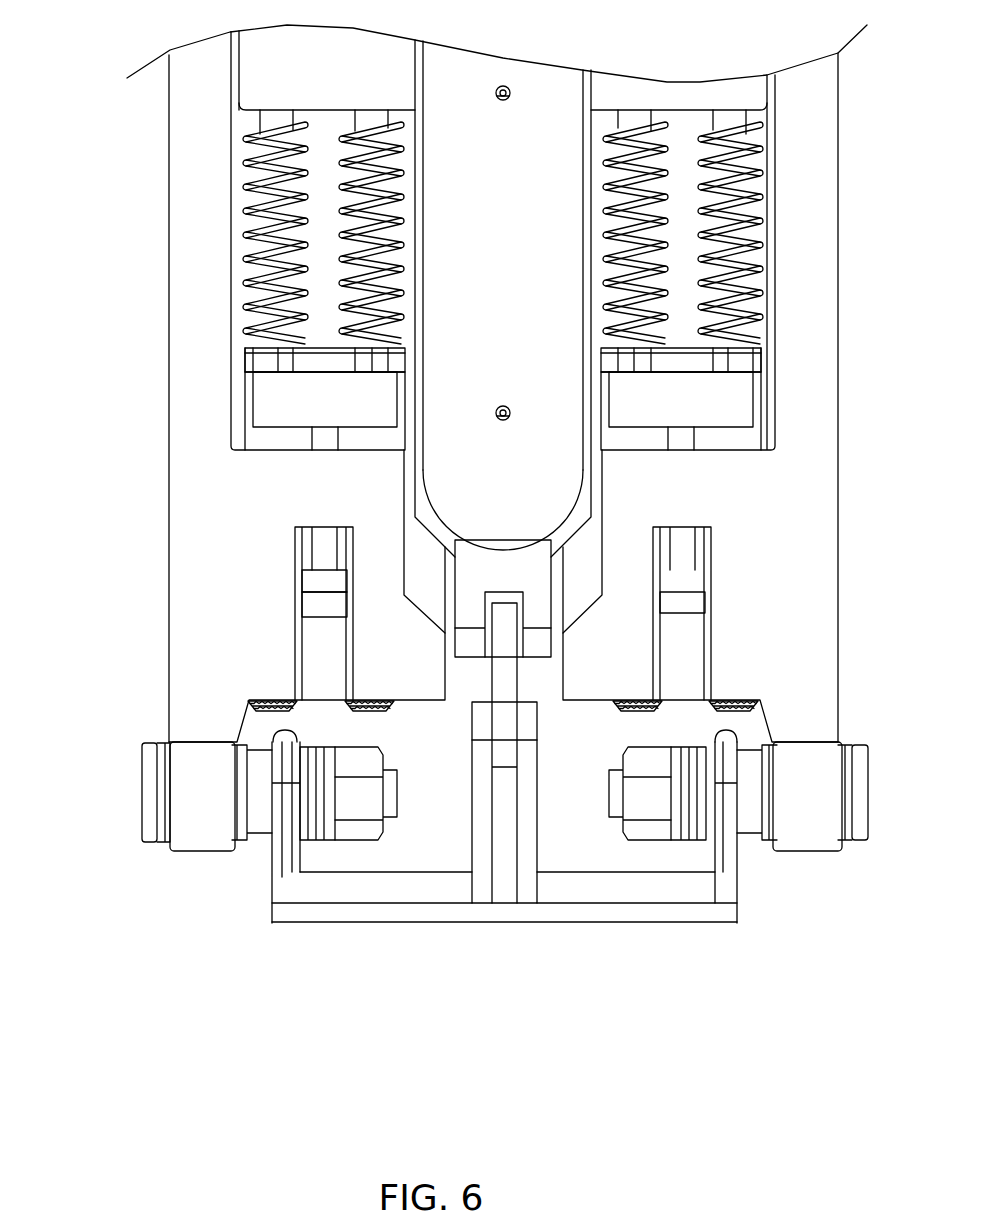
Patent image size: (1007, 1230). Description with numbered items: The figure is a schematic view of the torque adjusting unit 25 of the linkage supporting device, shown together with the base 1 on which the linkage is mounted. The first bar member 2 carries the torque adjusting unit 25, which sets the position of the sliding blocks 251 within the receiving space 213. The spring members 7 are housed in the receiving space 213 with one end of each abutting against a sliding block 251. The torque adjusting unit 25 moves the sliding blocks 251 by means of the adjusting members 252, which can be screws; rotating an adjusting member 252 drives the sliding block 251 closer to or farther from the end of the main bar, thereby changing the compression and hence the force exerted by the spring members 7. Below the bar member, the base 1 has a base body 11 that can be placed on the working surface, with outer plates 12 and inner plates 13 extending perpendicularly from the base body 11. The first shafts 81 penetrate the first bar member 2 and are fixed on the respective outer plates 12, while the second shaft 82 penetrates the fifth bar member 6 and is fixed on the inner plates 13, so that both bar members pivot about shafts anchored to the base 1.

The base 1 is at (447, 1032).
The base body 11 is at (354, 903).
The outer plate 12 is at (282, 877).
The inner plate 13 is at (483, 873).
The first bar member 2 is at (72, 503).
The receiving space 213 is at (323, 227).
The torque adjusting unit 25 is at (117, 372).
The sliding block 251 is at (283, 400).
The adjusting member 252 is at (320, 603).
The fifth bar member 6 is at (503, 680).
The spring member 7 is at (257, 135).
The first shaft 81 is at (155, 797).
The second shaft 82 is at (463, 755).